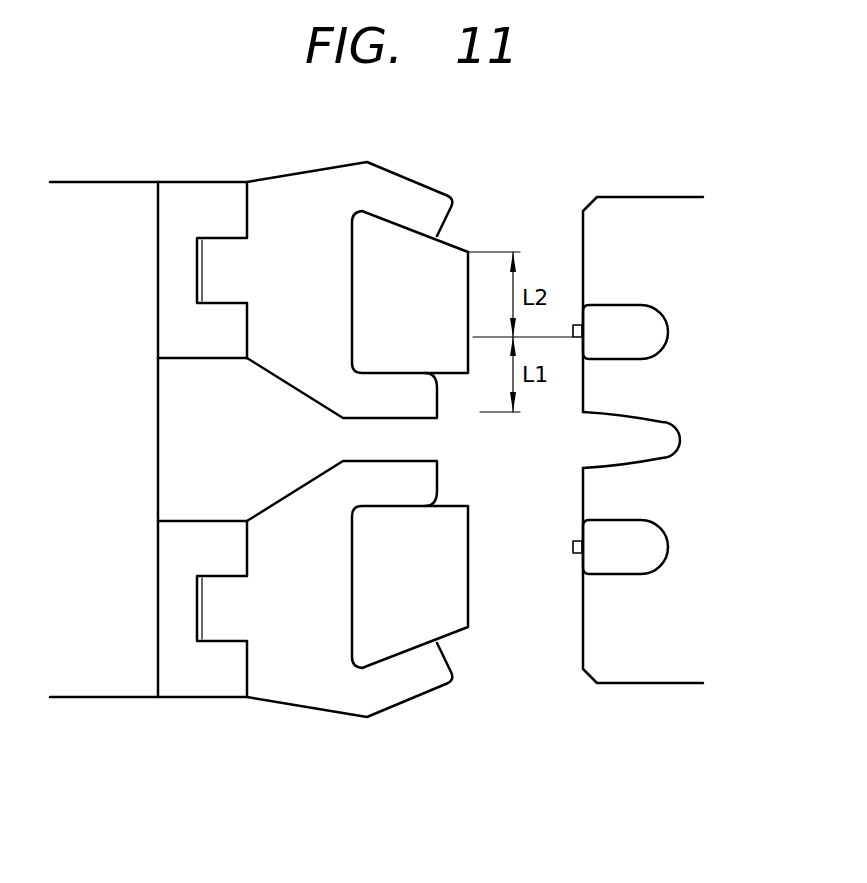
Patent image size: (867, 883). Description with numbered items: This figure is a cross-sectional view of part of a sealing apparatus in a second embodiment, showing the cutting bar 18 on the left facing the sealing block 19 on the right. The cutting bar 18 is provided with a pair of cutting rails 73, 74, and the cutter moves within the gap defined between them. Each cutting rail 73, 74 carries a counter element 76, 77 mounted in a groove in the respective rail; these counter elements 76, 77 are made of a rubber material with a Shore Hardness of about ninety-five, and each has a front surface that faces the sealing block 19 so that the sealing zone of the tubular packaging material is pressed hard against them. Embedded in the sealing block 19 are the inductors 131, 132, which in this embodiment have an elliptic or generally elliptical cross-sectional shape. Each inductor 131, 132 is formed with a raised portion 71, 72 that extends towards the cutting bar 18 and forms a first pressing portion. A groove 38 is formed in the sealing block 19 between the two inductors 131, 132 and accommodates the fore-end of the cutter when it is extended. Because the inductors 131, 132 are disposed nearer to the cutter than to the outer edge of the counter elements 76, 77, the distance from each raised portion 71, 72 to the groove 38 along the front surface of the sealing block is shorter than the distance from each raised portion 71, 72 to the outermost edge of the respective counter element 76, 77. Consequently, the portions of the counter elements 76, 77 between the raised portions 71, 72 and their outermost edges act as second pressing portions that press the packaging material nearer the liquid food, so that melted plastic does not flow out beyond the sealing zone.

The cutting bar 18 is at (341, 126).
The sealing block 19 is at (662, 408).
The cutting rail 73 is at (298, 183).
The cutting rail 74 is at (328, 680).
The counter element 76 is at (382, 228).
The counter element 77 is at (442, 613).
The raised portion 71 is at (575, 325).
The raised portion 72 is at (572, 553).
The inductor 131 is at (650, 313).
The inductor 132 is at (644, 531).
The groove 38 is at (667, 435).